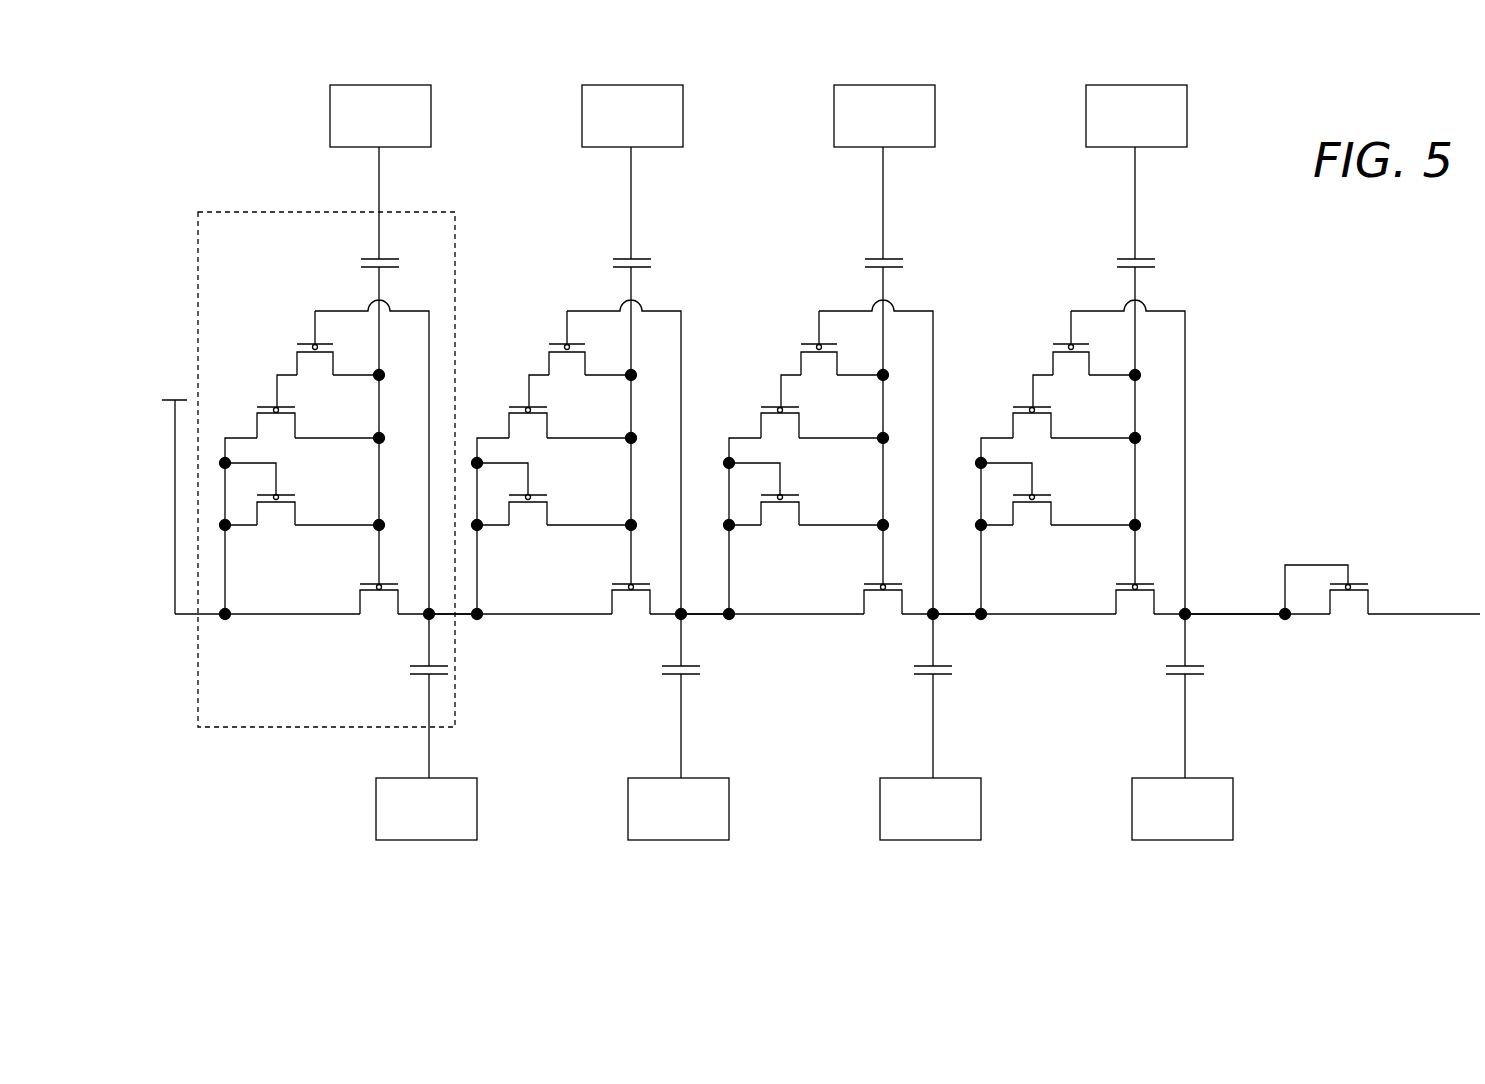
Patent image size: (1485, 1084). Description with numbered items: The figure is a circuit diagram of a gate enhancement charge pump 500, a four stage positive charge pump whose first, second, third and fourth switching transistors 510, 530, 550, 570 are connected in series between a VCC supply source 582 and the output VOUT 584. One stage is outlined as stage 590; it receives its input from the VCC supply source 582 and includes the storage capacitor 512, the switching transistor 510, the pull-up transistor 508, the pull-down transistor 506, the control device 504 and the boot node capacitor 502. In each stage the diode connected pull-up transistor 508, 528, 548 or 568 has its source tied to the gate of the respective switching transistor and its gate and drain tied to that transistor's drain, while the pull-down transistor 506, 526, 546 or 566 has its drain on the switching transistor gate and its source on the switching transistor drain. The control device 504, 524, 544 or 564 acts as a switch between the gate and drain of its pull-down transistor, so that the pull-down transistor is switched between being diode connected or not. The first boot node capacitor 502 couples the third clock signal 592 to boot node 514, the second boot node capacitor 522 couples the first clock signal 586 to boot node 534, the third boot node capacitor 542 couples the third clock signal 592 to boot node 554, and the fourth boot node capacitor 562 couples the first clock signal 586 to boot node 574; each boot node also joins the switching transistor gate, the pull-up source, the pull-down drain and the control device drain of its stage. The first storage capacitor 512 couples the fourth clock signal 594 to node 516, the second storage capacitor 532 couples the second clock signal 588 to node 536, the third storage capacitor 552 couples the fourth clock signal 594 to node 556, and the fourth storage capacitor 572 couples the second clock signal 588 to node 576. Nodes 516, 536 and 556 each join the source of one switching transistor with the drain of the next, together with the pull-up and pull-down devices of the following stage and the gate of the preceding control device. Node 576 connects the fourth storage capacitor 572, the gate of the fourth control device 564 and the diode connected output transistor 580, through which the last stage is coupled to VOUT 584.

The gate enhancement charge pump 500 is at (1290, 365).
The boot node capacitor C11 502 is at (419, 251).
The control device N11 504 is at (353, 343).
The pull-down transistor N12 506 is at (316, 406).
The pull-up transistor N13 508 is at (316, 489).
The switching transistor N14 510 is at (416, 577).
The storage capacitor C12 512 is at (416, 701).
The boot node 514 is at (378, 458).
The node 516 is at (505, 616).
The boot node capacitor C21 522 is at (629, 250).
The control device N21 524 is at (568, 343).
The pull-down transistor N22 526 is at (526, 413).
The pull-up transistor N23 528 is at (526, 498).
The switching transistor N24 530 is at (626, 586).
The storage capacitor C22 532 is at (668, 673).
The boot node 534 is at (597, 481).
The node 536 is at (749, 645).
The boot node capacitor C31 542 is at (881, 250).
The control device N31 544 is at (820, 343).
The pull-down transistor N32 546 is at (778, 413).
The pull-up transistor N33 548 is at (778, 498).
The switching transistor N34 550 is at (878, 586).
The storage capacitor C32 552 is at (920, 673).
The boot node 554 is at (849, 481).
The node 556 is at (1001, 645).
The boot node capacitor C41 562 is at (1133, 250).
The control device N41 564 is at (1072, 343).
The pull-down transistor N42 566 is at (1030, 413).
The pull-up transistor N43 568 is at (1030, 498).
The switching transistor N44 570 is at (1130, 586).
The storage capacitor C42 572 is at (1172, 673).
The boot node 574 is at (1101, 481).
The node 576 is at (1248, 646).
The diode connected transistor N50 580 is at (1389, 582).
The VCC supply source 582 is at (171, 427).
The VOUT 584 is at (1471, 644).
The CLOCK 1 signal 586 is at (884, 116).
The CLOCK 2 signal 588 is at (930, 809).
The stage 590 is at (455, 287).
The CLOCK 3 signal 592 is at (632, 116).
The CLOCK 4 signal 594 is at (678, 809).